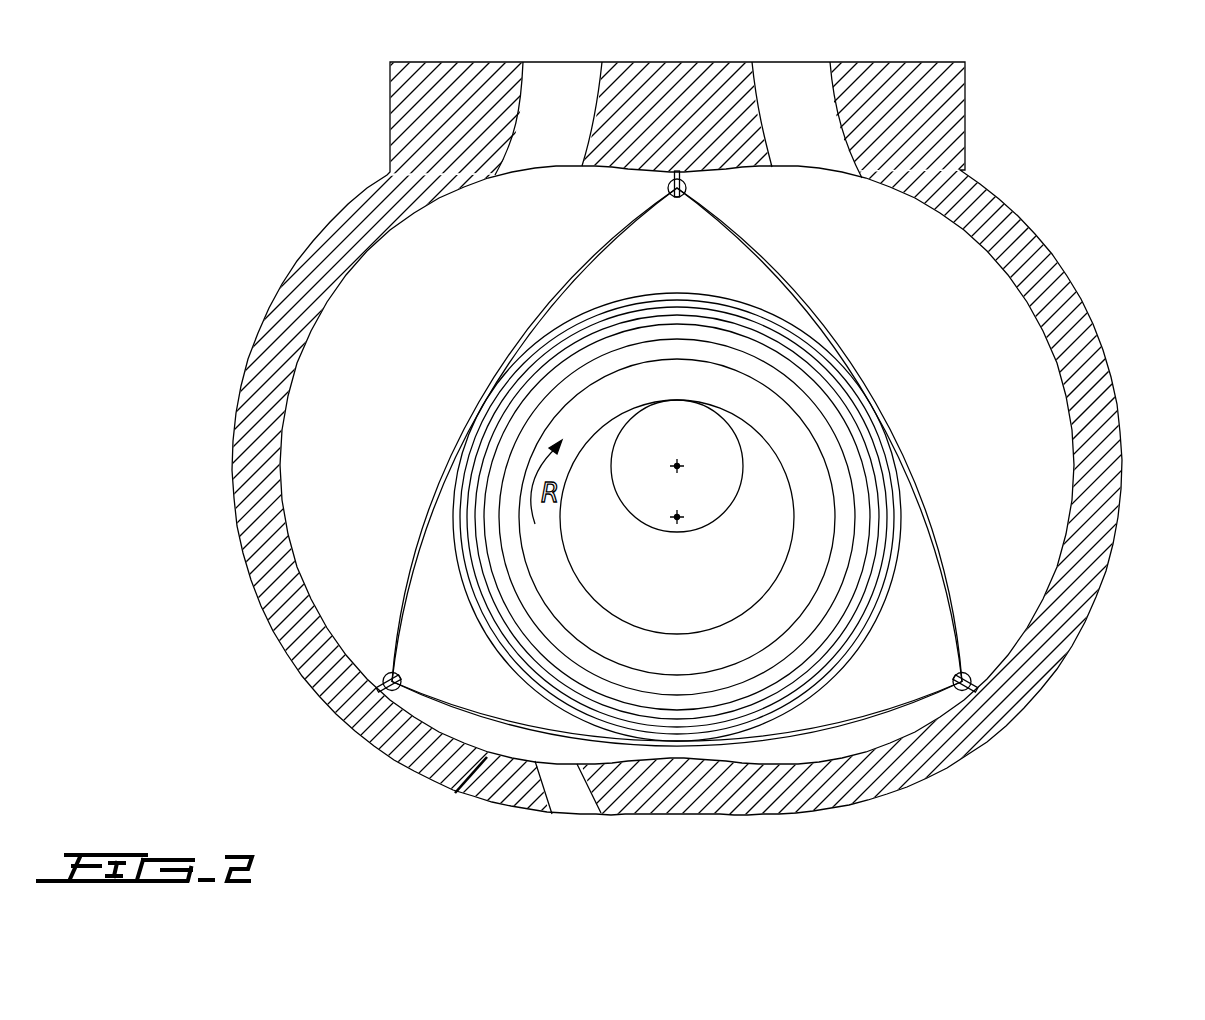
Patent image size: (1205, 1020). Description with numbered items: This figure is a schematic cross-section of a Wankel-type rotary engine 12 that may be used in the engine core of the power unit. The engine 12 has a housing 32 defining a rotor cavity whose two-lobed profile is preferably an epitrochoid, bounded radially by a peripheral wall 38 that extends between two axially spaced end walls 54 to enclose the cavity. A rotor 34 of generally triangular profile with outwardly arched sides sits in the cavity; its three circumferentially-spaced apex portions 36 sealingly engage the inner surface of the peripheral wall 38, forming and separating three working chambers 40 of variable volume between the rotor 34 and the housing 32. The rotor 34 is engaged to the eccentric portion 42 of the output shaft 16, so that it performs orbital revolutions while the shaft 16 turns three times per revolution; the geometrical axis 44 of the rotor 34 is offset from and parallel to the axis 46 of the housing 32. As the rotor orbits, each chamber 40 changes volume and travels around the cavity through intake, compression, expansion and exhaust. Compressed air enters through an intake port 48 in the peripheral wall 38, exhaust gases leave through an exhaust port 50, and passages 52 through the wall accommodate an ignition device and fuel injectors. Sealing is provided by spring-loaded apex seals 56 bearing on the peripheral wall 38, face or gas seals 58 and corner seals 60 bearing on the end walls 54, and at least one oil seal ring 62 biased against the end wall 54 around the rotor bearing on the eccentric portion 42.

The intermittent internal combustion engine 12 is at (298, 176).
The output shaft 16 is at (705, 501).
The housing 32 is at (1040, 222).
The rotor 34 is at (942, 488).
The apex portions 36 is at (983, 700).
The peripheral wall 38 is at (1093, 322).
The working chambers 40 is at (363, 382).
The eccentric portion 42 is at (675, 601).
The geometrical axis of the rotor 44 is at (677, 517).
The axis of the housing 46 is at (677, 466).
The intake port 48 is at (807, 138).
The exhaust port 50 is at (550, 137).
The passages 52 is at (560, 797).
The end walls 54 is at (1043, 533).
The apex seals 56 is at (377, 690).
The face seals 58 is at (408, 583).
The corner seals 60 is at (375, 674).
The oil seal ring 62 is at (787, 702).